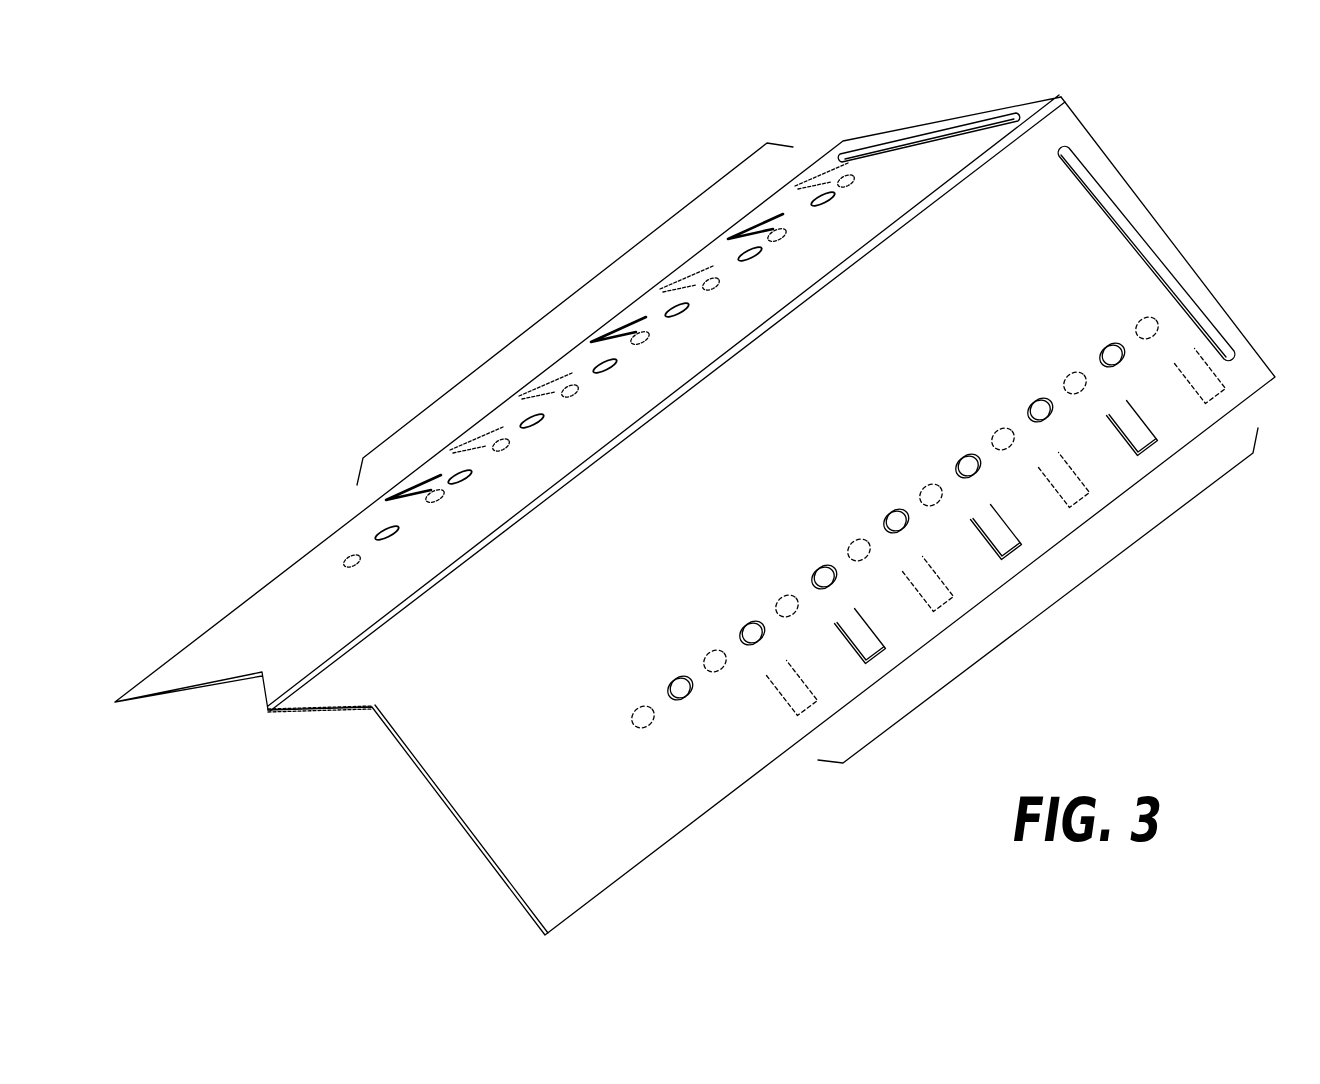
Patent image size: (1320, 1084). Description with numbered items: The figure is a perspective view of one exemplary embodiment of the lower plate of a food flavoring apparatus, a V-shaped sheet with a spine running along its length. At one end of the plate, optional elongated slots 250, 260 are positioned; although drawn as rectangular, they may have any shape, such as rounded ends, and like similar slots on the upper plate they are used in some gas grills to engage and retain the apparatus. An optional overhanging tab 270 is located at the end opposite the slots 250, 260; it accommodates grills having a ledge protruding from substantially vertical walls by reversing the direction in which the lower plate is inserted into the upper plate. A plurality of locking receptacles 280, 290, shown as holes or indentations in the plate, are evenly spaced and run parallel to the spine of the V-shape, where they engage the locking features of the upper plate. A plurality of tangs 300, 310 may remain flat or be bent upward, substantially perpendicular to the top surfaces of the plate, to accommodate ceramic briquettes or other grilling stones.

The elongated slot 250 is at (963, 127).
The elongated slot 260 is at (1140, 233).
The overhanging tab 270 is at (310, 693).
The locking receptacle 280 is at (333, 538).
The locking receptacle 290 is at (637, 730).
The tang 300 is at (555, 308).
The tang 310 is at (1060, 612).